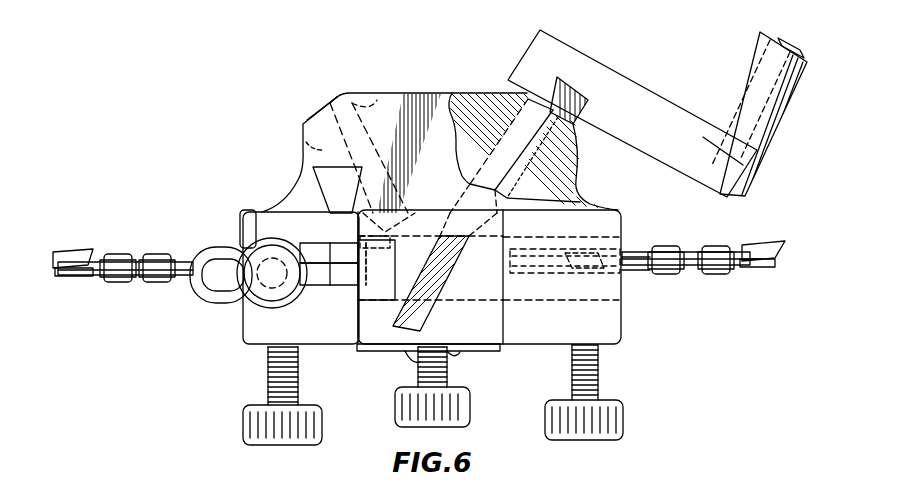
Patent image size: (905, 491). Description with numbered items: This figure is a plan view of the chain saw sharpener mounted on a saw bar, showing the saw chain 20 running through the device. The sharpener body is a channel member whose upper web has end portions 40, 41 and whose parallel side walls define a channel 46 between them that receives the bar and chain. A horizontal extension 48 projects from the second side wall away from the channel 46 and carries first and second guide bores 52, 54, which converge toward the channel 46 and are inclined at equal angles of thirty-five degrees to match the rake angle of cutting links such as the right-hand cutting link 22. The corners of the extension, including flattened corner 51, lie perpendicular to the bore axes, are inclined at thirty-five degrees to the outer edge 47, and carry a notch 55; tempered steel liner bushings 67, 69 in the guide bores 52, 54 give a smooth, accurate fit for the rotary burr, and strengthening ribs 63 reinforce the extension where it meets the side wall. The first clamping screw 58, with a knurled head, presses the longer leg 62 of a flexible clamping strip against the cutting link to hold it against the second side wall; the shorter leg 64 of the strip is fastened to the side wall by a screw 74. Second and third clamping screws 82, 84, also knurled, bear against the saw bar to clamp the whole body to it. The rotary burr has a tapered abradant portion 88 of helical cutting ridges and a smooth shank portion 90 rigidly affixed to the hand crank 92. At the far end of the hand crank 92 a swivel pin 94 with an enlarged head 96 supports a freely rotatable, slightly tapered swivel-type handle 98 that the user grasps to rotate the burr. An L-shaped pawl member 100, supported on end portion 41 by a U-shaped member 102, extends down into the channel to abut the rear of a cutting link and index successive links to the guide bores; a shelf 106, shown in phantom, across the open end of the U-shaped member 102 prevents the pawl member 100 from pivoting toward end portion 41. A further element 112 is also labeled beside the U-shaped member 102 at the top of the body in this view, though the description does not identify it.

The saw chain 20 is at (120, 283).
The right-hand cutting link 22 is at (420, 238).
The upper web end portion 40 is at (619, 333).
The upper web end portion 41 is at (243, 330).
The channel 46 is at (634, 290).
The outer edge of horizontal extension 47 is at (405, 93).
The horizontal extension 48 is at (448, 96).
The flattened corner 51 is at (312, 117).
The first guide bore 52 is at (550, 172).
The second guide bore 54 is at (377, 100).
The notch 55 is at (328, 100).
The first clamping screw 58 is at (460, 380).
The longer leg of clamping strip 62 is at (490, 275).
The strengthening ribs 63 is at (318, 180).
The shorter leg of clamping strip 64 is at (470, 352).
The liner bushing 67 is at (553, 150).
The liner bushing 69 is at (306, 142).
The screw 74 is at (407, 362).
The second clamping screw 82 is at (598, 373).
The third clamping screw 84 is at (268, 375).
The tapered abradant portion 88 is at (432, 305).
The smooth shank portion 90 is at (494, 96).
The hand crank 92 is at (644, 98).
The swivel pin 94 is at (770, 146).
The enlarged head 96 is at (795, 38).
The swivel-type handle 98 is at (738, 72).
The pawl member 100 is at (362, 310).
The U-shaped member 102 is at (212, 247).
The shelf 106 is at (336, 238).
The tab 112 is at (252, 210).